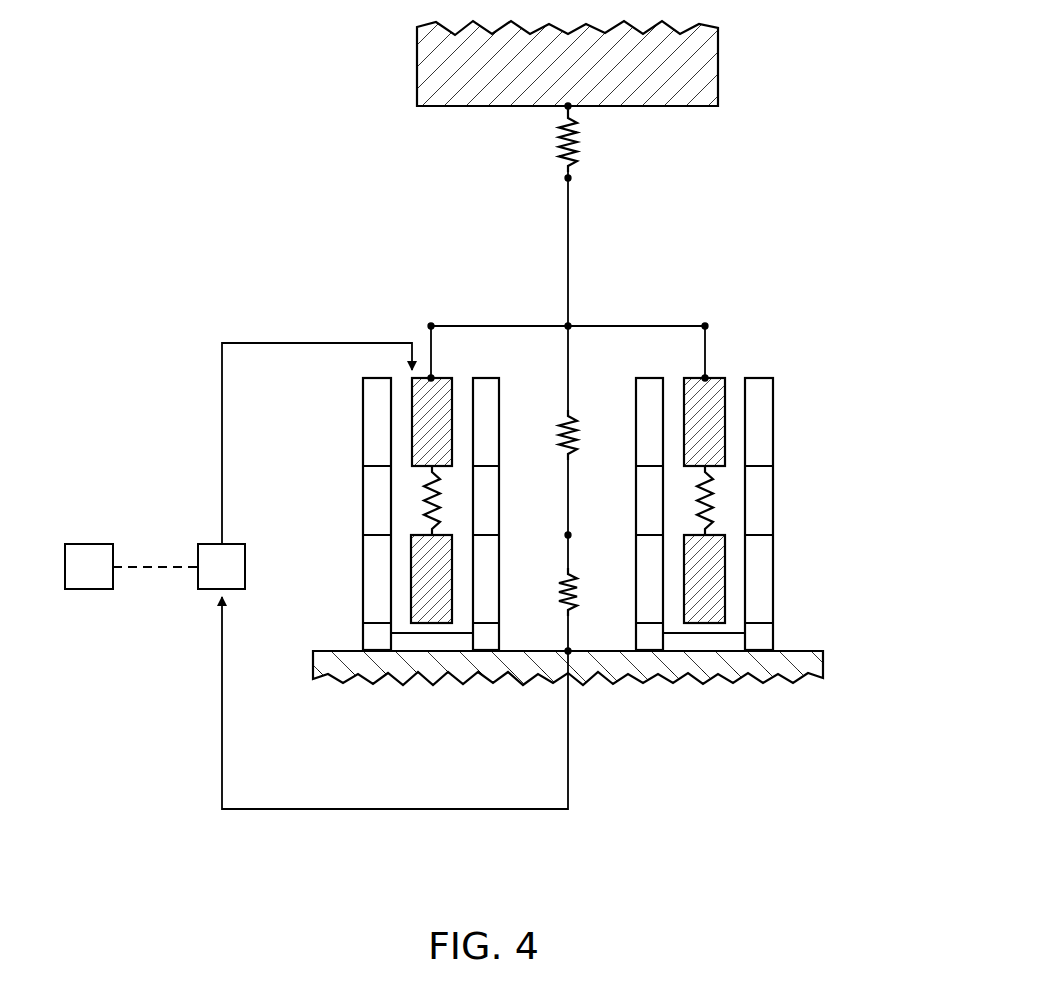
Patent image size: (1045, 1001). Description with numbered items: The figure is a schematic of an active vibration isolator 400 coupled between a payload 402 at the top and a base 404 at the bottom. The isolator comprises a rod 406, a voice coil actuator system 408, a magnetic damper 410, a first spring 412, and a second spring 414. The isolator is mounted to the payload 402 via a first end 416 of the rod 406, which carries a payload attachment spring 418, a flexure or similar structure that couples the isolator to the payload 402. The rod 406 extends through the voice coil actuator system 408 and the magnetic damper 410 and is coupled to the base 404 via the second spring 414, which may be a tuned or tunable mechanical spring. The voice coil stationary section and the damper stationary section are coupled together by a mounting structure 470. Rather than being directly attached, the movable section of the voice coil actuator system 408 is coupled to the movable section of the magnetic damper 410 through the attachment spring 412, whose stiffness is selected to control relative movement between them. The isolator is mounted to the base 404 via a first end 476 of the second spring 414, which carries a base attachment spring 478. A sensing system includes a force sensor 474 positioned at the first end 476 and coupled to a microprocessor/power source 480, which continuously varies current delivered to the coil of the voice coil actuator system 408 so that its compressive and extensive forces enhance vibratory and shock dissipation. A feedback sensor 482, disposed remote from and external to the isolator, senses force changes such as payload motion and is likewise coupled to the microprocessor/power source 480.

The vibration isolator 400 is at (808, 131).
The payload 402 is at (713, 66).
The base 404 is at (809, 656).
The rod 406 is at (572, 245).
The voice coil actuator system 408 is at (790, 408).
The magnetic damper 410 is at (790, 582).
The first spring 412 is at (728, 501).
The second spring 414 is at (592, 422).
The first end of the rod 416 is at (572, 178).
The payload attachment spring 418 is at (546, 146).
The mounting structure 470 is at (364, 507).
The force sensor 474 is at (569, 652).
The first end of the second spring 476 is at (572, 535).
The base attachment spring 478 is at (546, 560).
The microprocessor/power source 480 is at (198, 586).
The feedback sensor 482 is at (90, 544).